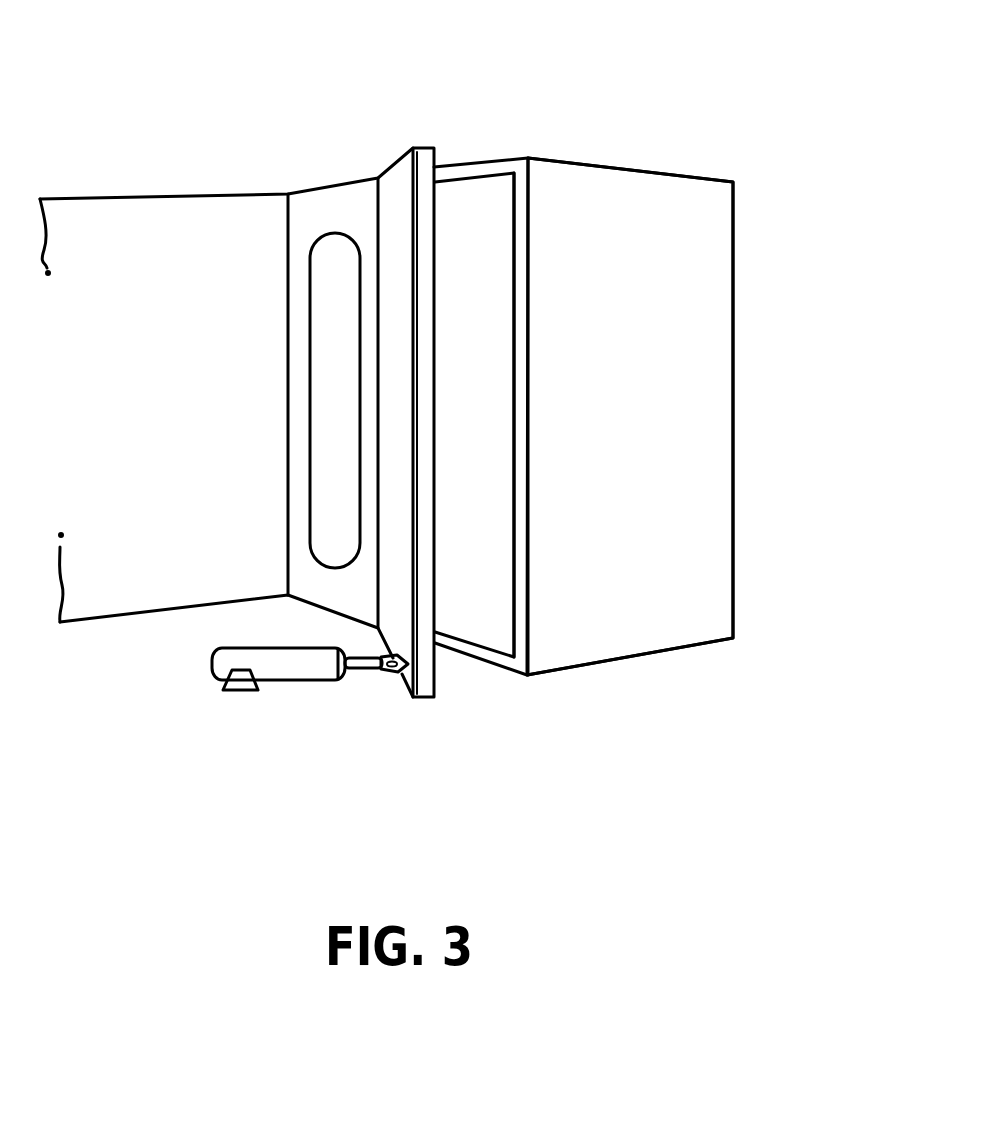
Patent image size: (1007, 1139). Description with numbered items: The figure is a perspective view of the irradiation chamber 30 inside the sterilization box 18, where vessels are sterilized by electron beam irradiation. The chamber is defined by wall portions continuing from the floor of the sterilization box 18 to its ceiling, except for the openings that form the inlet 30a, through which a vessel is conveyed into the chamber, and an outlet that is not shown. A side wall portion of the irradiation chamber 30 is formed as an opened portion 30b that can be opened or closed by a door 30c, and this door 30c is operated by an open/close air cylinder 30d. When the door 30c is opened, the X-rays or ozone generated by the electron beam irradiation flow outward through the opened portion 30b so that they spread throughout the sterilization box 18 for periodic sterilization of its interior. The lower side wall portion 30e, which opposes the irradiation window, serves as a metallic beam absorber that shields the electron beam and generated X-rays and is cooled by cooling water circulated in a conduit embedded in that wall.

The sterilization box 18 is at (167, 190).
The irradiation chamber 30 is at (653, 398).
The inlet 30a is at (310, 343).
The opened portion 30b is at (513, 593).
The door 30c is at (398, 187).
The open/close air cylinder 30d is at (292, 682).
The lower side wall portion 30e is at (670, 488).